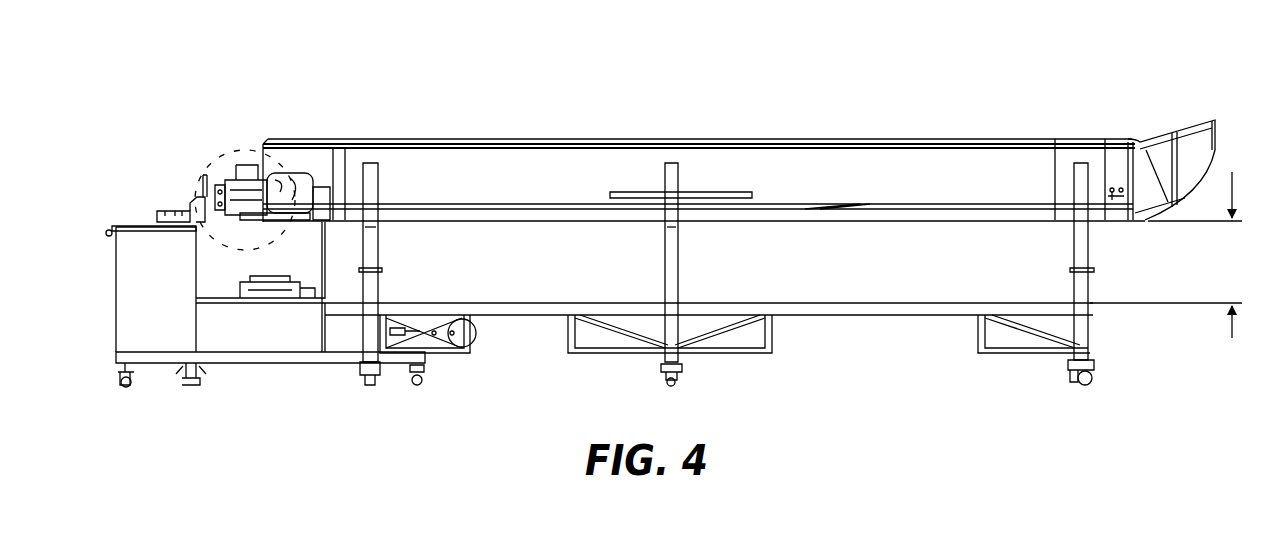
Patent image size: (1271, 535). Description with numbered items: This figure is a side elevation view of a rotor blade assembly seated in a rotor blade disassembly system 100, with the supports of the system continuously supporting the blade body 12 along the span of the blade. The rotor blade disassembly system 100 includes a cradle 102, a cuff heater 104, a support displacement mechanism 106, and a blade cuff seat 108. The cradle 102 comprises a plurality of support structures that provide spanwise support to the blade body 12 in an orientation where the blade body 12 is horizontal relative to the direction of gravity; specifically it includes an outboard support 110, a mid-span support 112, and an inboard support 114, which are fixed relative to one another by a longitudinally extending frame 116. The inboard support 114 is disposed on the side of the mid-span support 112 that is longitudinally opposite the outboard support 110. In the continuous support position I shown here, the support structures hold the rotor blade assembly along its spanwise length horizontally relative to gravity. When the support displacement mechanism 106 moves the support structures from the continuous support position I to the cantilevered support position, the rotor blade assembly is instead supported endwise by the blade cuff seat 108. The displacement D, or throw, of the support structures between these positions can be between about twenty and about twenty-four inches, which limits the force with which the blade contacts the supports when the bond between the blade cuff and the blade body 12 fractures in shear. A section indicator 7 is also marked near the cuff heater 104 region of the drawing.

The blade body 12 is at (729, 116).
The rotor blade disassembly system 100 is at (437, 457).
The cradle 102 is at (790, 272).
The cuff heater 104 is at (265, 186).
The support displacement mechanism 106 is at (418, 335).
The blade cuff seat 108 is at (233, 162).
The outboard support 110 is at (1082, 250).
The mid-span support 112 is at (676, 265).
The inboard support 114 is at (360, 255).
The longitudinally extending frame 116 is at (885, 312).
The section line 7 is at (190, 228).
The continuous support position I is at (1085, 182).
The displacement D is at (1166, 255).